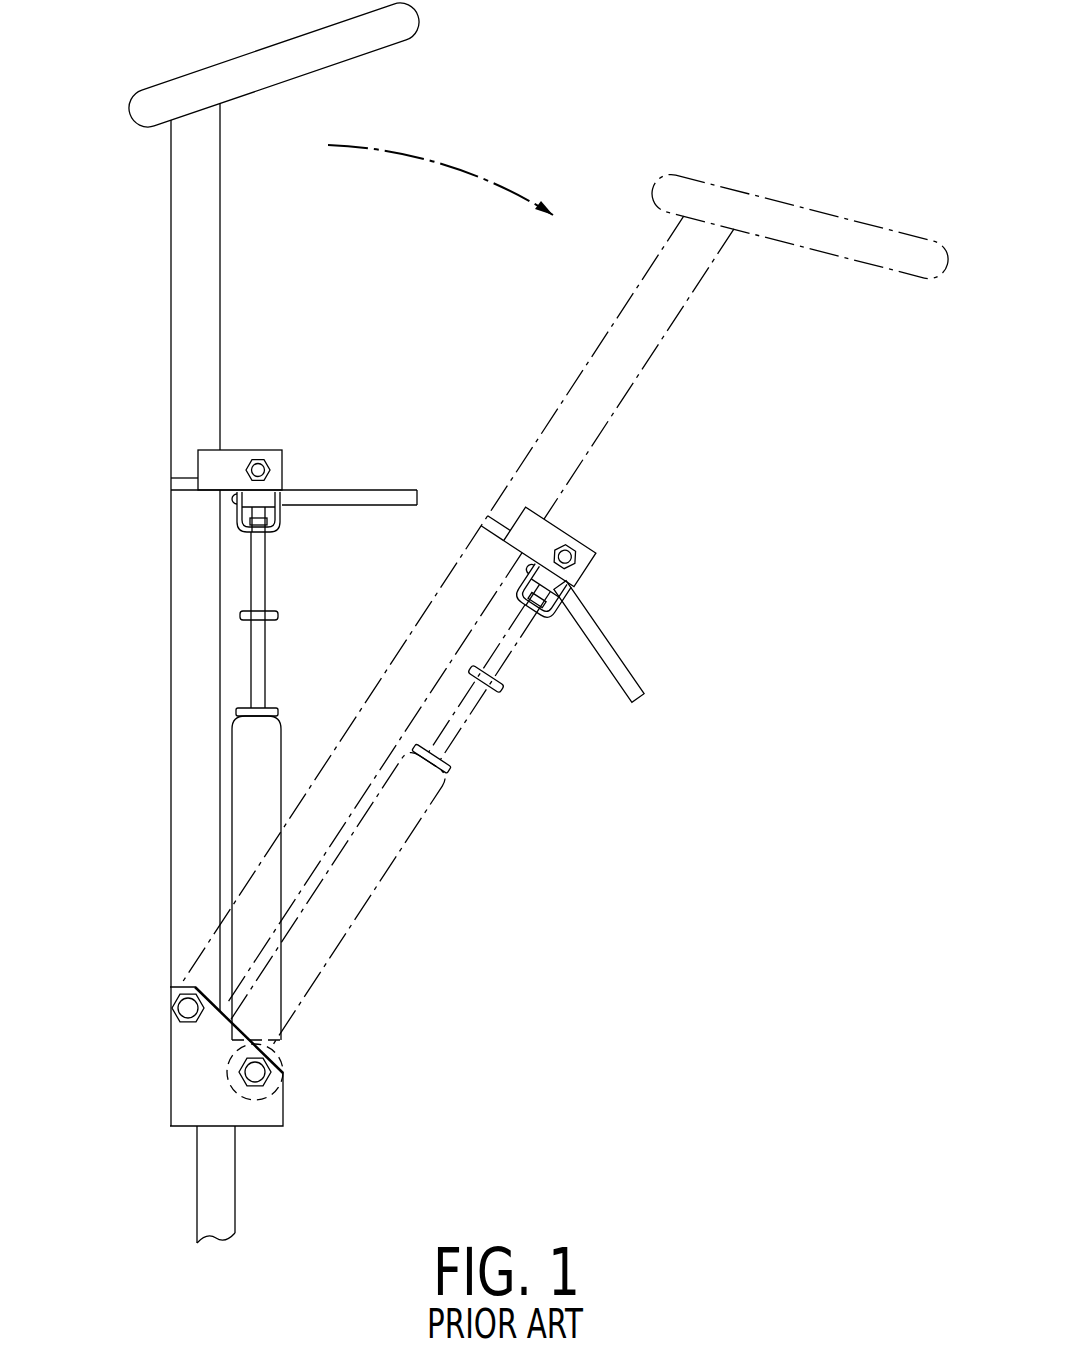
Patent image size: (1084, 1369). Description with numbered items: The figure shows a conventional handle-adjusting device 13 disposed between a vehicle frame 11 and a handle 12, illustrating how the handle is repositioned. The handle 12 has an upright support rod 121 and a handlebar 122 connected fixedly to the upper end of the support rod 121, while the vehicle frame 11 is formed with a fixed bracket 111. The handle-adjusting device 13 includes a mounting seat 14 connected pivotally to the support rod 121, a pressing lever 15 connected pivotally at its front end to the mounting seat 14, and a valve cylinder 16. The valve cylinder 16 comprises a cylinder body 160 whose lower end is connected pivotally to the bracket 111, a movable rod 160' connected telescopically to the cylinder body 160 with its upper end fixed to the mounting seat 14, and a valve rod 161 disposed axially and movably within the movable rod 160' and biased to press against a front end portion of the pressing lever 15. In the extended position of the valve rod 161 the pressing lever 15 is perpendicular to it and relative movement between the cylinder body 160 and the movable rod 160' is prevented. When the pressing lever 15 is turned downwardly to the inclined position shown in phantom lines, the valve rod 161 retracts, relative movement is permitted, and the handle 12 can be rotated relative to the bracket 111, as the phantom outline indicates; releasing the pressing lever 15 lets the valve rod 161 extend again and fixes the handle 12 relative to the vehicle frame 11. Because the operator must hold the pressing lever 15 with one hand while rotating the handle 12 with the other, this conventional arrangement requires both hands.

The vehicle frame 11 is at (175, 1146).
The fixed bracket 111 is at (197, 1053).
The handle 12 is at (188, 325).
The upright support rod 121 is at (203, 202).
The handlebar 122 is at (357, 29).
The handle-adjusting device 13 is at (300, 465).
The mounting seat 14 is at (237, 513).
The pressing lever 15 is at (368, 497).
The valve cylinder 16 is at (260, 669).
The cylinder body 160 is at (354, 797).
The movable rod 160' is at (520, 730).
The valve rod 161 is at (260, 508).